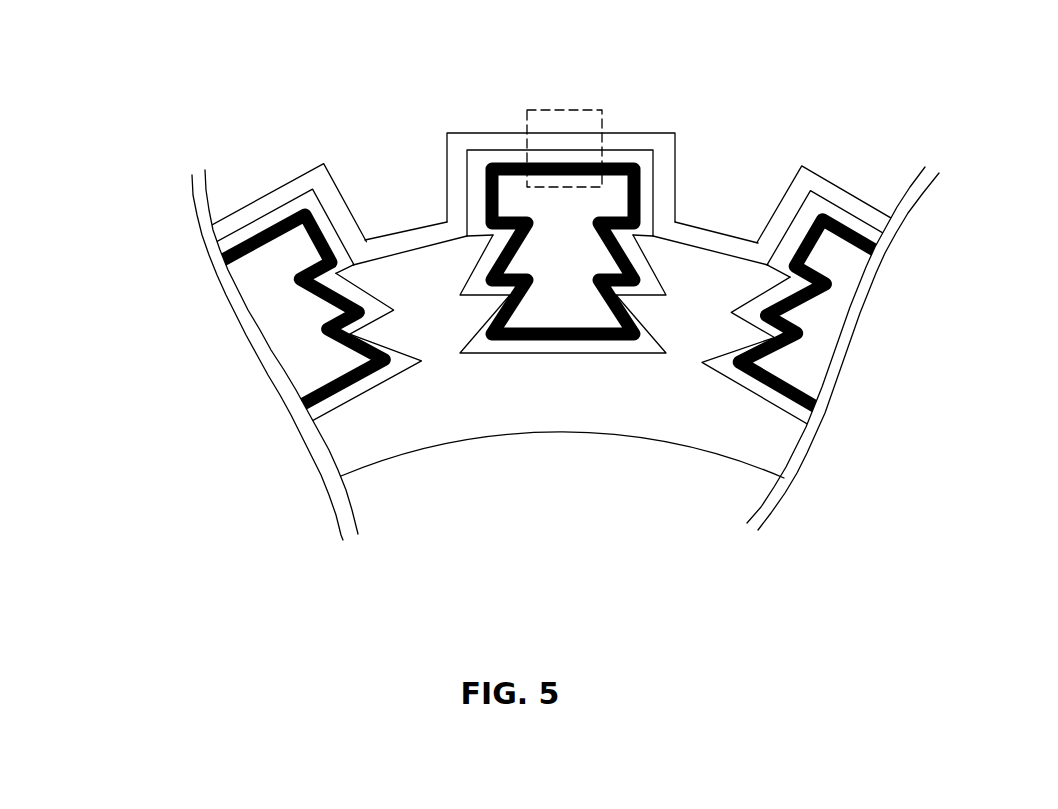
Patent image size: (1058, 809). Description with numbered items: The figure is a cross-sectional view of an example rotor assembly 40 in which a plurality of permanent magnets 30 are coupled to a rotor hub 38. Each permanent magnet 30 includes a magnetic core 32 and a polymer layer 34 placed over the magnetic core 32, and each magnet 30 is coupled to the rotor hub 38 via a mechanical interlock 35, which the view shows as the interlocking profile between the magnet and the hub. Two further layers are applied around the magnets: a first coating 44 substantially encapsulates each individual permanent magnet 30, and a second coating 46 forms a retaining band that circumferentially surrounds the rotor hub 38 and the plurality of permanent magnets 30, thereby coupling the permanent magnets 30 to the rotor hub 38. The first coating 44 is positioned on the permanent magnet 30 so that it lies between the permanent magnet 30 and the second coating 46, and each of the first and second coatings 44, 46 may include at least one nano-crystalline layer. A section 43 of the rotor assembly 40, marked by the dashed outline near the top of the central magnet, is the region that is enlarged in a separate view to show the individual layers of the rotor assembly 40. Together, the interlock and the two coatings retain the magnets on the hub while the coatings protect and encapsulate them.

The permanent magnet 30 is at (518, 362).
The magnetic core 32 is at (330, 370).
The polymer layer 34 is at (328, 312).
The mechanical interlock 35 is at (452, 270).
The rotor hub 38 is at (644, 403).
The rotor assembly 40 is at (348, 73).
The section 43 is at (572, 105).
The first coating 44 is at (245, 232).
The second coating 46 is at (320, 172).